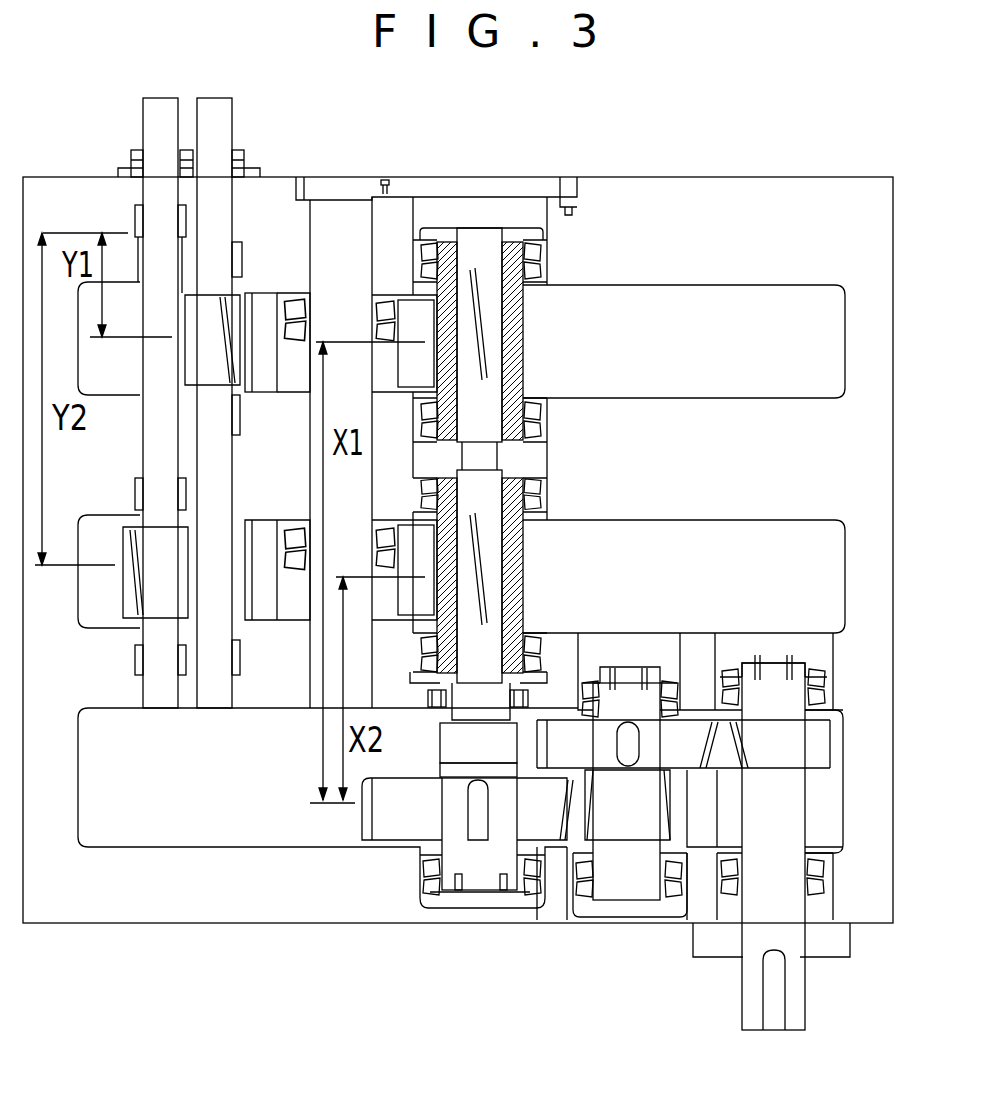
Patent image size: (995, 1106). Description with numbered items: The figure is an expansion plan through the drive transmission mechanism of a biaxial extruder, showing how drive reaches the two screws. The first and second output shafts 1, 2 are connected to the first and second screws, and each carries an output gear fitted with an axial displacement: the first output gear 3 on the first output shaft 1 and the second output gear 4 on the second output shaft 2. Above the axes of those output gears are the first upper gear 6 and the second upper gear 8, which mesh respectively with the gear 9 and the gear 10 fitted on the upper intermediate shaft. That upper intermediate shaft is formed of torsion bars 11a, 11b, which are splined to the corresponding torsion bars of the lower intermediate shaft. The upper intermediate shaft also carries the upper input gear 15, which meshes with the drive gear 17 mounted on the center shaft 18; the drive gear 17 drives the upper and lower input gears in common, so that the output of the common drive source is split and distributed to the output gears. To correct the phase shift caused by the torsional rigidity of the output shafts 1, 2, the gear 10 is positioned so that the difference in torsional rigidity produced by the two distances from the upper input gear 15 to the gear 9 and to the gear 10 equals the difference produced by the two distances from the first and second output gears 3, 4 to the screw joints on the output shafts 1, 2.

The first output shaft 1 is at (228, 252).
The second output shaft 2 is at (140, 250).
The first output gear 3 is at (252, 305).
The second output gear 4 is at (122, 608).
The first upper gear 6 is at (285, 383).
The second upper gear 8 is at (285, 548).
The gear 9 is at (530, 302).
The gear 10 is at (540, 538).
The torsion bar 11a is at (500, 617).
The torsion bar 11b is at (495, 357).
The upper input gear 15 is at (362, 832).
The drive gear 17 is at (573, 833).
The center shaft 18 is at (653, 820).